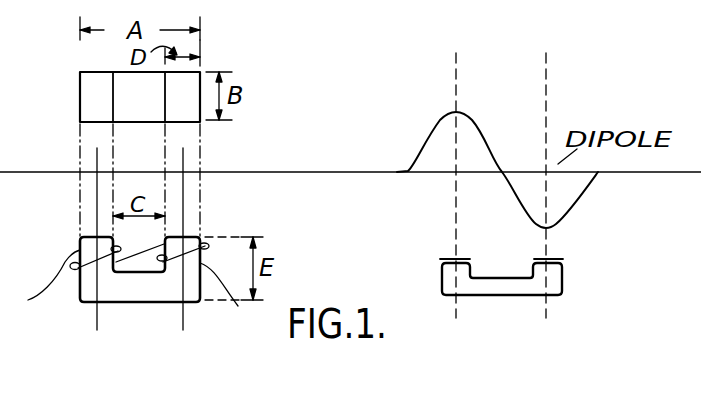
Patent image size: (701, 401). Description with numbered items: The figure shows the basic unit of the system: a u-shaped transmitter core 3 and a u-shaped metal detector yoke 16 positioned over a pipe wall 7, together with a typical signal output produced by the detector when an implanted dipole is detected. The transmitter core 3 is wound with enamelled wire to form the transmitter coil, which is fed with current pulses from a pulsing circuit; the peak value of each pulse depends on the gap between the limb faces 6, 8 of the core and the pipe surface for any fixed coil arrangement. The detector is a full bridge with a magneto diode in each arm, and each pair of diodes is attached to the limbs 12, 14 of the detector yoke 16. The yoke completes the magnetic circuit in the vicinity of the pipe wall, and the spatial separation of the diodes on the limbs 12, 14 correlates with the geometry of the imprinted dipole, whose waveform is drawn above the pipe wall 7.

The transmitter core 3 is at (140, 269).
The limb face 6 is at (97, 237).
The pipe wall 7 is at (373, 148).
The limb face 8 is at (185, 238).
The limb 12 is at (442, 281).
The limb 14 is at (573, 273).
The detector yoke 16 is at (536, 313).